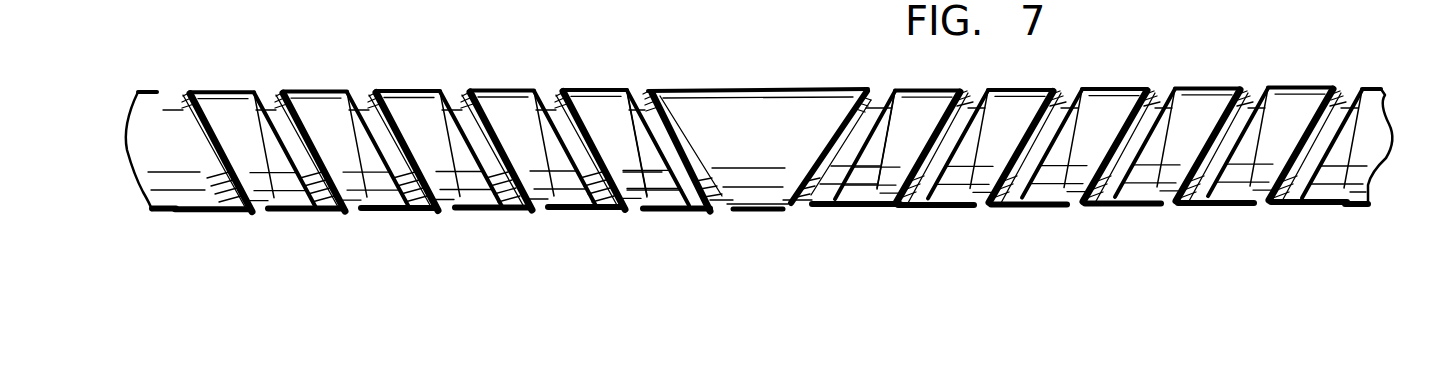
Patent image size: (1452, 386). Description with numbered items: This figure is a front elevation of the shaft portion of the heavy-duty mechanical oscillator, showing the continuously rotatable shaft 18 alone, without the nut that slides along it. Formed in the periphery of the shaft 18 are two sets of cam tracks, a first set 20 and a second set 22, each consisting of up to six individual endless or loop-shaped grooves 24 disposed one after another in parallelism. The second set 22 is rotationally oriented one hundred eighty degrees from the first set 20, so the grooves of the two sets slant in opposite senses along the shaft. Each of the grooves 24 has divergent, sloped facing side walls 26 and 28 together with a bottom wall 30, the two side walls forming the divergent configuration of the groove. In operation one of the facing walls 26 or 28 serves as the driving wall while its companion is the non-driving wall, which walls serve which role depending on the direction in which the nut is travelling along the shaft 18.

The shaft 18 is at (737, 97).
The first set of cam grooves 20 is at (496, 233).
The second set of cam grooves 22 is at (902, 236).
The endless grooves 24 is at (263, 100).
The sloped side wall 26 is at (230, 194).
The sloped side wall 28 is at (189, 112).
The bottom wall 30 is at (183, 111).